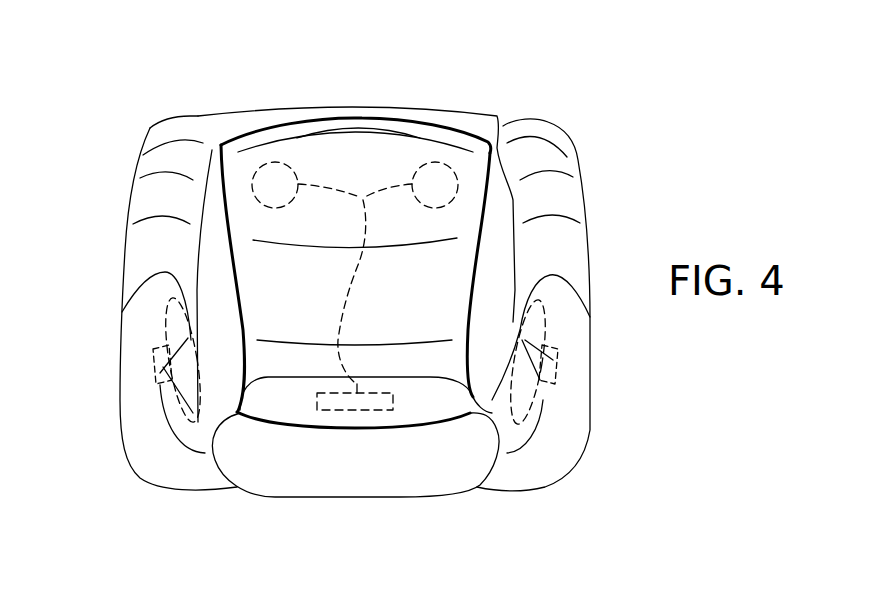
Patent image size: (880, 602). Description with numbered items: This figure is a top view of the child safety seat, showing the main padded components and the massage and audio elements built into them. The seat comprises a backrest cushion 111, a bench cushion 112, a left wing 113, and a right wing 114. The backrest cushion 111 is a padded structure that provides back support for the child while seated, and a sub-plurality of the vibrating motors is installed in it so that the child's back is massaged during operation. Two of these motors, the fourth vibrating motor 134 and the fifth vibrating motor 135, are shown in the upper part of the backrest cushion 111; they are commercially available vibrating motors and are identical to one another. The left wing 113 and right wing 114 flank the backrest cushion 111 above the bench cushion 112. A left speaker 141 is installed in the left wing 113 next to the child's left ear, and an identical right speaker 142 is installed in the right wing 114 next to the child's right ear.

The backrest cushion 111 is at (345, 477).
The bench cushion 112 is at (362, 150).
The left wing 113 is at (145, 252).
The right wing 114 is at (563, 250).
The fourth vibrating motor 134 is at (437, 173).
The fifth vibrating motor 135 is at (280, 183).
The left speaker 141 is at (163, 385).
The right speaker 142 is at (553, 357).